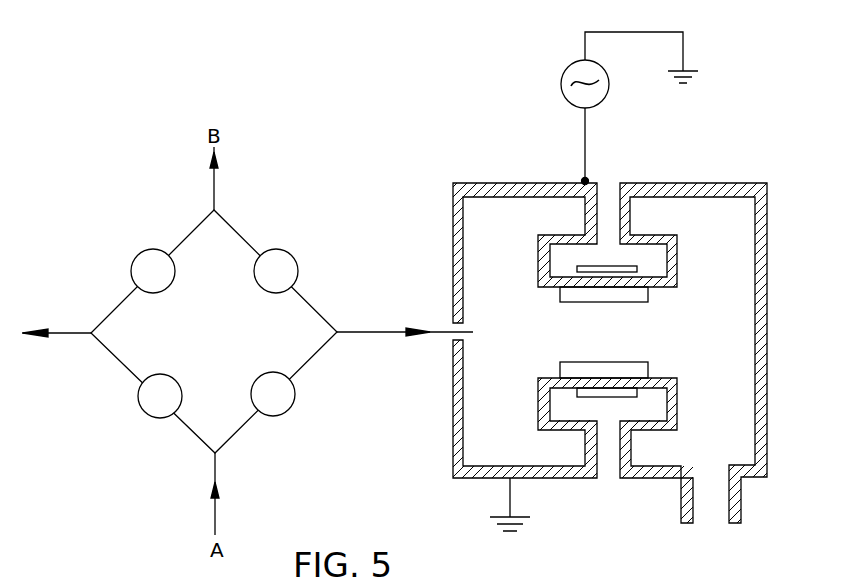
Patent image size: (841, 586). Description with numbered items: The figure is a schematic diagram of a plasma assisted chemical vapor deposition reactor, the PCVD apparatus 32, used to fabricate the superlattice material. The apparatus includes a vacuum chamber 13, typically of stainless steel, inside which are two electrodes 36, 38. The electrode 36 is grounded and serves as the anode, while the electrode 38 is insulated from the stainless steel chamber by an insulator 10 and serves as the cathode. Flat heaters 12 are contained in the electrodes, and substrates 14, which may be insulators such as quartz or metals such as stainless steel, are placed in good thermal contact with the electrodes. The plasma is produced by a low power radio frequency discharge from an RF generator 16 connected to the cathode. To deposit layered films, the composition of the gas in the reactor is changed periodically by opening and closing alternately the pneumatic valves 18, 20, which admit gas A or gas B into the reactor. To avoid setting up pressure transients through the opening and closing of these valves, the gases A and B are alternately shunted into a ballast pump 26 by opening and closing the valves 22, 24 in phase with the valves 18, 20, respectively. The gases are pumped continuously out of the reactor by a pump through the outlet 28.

The insulator 10 is at (640, 153).
The flat heaters 12 is at (640, 396).
The vacuum chamber 13 is at (774, 160).
The substrates 14 is at (613, 302).
The RF generator 16 is at (562, 82).
The pneumatic valve 18 is at (288, 412).
The pneumatic valve 20 is at (294, 228).
The valve 22 is at (138, 254).
The valve 24 is at (138, 402).
The ballast pump 26 is at (68, 330).
The outlet 28 is at (742, 516).
The PCVD apparatus 32 is at (776, 202).
The electrode 36 is at (538, 392).
The electrode 38 is at (538, 264).